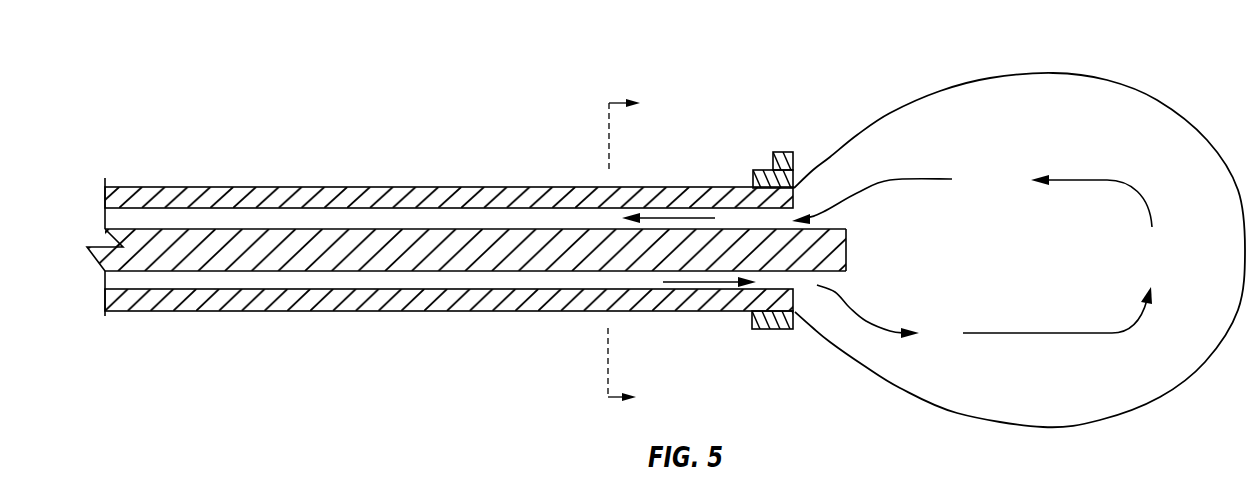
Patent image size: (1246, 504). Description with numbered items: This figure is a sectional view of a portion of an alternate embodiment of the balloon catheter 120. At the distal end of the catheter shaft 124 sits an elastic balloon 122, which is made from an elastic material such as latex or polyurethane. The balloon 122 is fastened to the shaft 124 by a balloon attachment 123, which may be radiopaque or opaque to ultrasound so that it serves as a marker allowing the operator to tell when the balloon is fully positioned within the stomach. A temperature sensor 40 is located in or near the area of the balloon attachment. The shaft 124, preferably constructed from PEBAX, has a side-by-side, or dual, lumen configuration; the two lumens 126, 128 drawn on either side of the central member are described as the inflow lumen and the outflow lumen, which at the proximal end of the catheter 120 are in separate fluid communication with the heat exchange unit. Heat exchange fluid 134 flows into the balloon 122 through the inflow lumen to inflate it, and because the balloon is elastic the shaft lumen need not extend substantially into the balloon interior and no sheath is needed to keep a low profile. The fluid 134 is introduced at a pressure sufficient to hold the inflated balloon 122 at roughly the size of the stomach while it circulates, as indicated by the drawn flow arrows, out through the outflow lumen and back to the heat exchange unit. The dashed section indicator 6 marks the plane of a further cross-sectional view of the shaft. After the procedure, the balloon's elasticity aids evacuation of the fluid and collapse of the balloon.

The balloon catheter 120 is at (436, 154).
The elastic balloon 122 is at (1019, 229).
The balloon attachment 123 is at (738, 350).
The catheter shaft 124 is at (449, 274).
The outflow lumen 126 is at (488, 316).
The inflow lumen 128 is at (450, 182).
The heat exchange fluid 134 is at (1002, 241).
The temperature sensor 40 is at (757, 139).
The section line for FIG. 6 is at (633, 250).